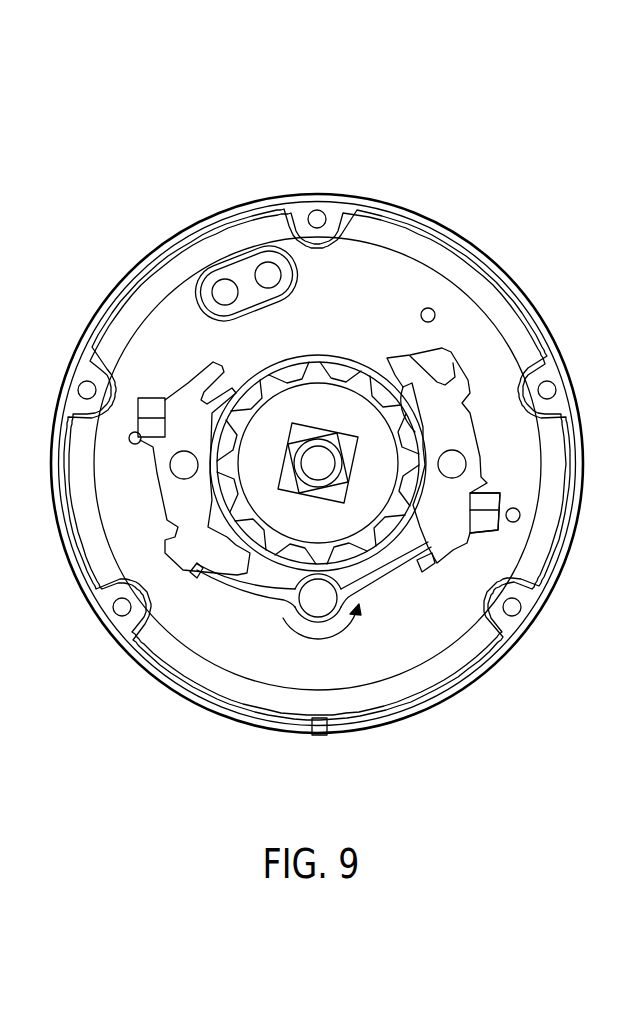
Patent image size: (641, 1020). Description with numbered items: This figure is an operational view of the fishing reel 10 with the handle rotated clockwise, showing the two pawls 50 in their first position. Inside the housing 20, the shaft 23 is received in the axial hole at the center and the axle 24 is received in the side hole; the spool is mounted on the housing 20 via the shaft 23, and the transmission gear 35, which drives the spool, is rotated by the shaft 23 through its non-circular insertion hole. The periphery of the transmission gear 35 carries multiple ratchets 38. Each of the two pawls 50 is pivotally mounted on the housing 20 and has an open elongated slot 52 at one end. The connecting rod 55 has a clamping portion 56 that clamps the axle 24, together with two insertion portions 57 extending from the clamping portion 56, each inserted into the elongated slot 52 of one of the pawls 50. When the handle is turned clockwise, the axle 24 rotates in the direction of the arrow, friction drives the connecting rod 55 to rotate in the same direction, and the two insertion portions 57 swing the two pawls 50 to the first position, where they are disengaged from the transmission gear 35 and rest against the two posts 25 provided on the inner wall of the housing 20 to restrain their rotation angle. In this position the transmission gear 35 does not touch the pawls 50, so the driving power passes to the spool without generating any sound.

The fishing reel 10 is at (452, 146).
The housing 20 is at (473, 282).
The shaft 23 is at (318, 465).
The axle 24 is at (312, 607).
The posts 25 is at (487, 497).
The transmission gear 35 is at (347, 407).
The ratchets 38 is at (265, 390).
The pawls 50 is at (455, 427).
The elongated slot 52 is at (423, 558).
The connecting rod 55 is at (373, 577).
The clamping portion 56 is at (330, 628).
The insertion portions 57 is at (187, 578).